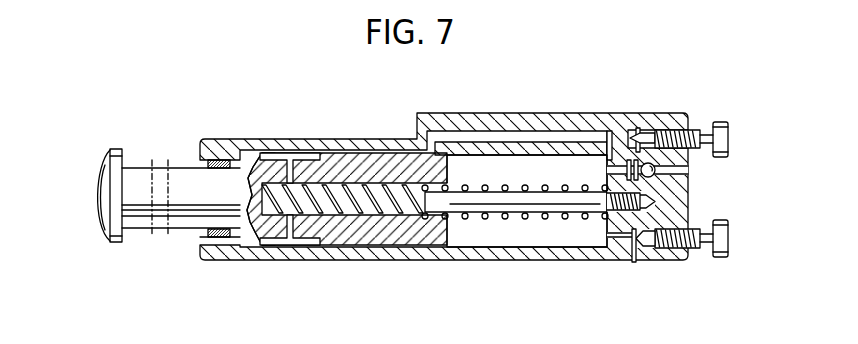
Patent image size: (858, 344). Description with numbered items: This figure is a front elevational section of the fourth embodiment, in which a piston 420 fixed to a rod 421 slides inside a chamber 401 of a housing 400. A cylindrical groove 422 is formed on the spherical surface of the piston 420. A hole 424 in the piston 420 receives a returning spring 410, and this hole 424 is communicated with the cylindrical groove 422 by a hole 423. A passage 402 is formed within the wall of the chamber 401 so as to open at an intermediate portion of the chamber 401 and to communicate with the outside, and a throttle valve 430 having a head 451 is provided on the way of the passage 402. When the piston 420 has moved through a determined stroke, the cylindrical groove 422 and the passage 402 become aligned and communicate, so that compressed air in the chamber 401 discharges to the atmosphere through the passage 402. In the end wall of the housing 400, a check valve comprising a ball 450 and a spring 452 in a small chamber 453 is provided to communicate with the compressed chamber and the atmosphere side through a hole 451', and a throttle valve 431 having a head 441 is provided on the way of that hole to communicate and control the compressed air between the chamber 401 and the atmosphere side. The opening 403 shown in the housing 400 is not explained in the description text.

The housing 400 is at (436, 124).
The chamber 401 is at (533, 240).
The passage 402 is at (487, 138).
The bore 403 is at (637, 131).
The returning spring 410 is at (412, 217).
The piston 420 is at (368, 168).
The rod 421 is at (184, 186).
The cylindrical groove 422 is at (270, 156).
The hole 423 is at (292, 158).
The hole 424 is at (372, 212).
The throttle valve 430 is at (647, 133).
The throttle valve 431 is at (638, 254).
The head 441 is at (722, 238).
The ball 450 is at (662, 162).
The head 451 is at (721, 136).
The hole 451' is at (683, 186).
The spring 452 is at (594, 138).
The small chamber 453 is at (622, 136).